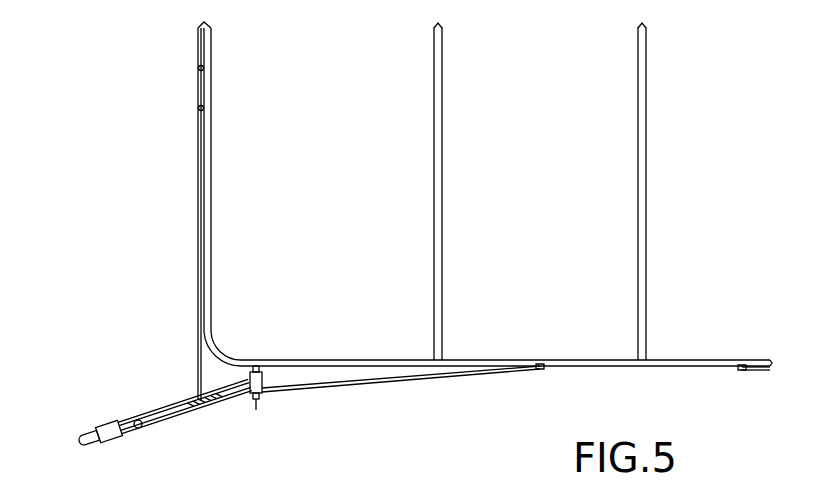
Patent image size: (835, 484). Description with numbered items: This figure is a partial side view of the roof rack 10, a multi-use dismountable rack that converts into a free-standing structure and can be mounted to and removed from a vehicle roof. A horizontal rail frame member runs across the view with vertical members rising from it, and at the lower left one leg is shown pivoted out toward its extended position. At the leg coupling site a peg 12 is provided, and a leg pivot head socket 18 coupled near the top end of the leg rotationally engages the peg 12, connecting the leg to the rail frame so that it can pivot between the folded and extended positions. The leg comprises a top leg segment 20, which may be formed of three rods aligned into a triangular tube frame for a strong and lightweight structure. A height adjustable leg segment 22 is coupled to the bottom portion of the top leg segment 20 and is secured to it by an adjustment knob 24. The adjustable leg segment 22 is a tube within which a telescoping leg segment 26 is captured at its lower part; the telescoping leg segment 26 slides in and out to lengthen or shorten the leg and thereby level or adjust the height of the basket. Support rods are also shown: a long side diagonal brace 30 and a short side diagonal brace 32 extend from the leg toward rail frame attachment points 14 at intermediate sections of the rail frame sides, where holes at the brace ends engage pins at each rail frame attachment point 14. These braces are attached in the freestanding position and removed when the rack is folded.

The roof rack 10 is at (662, 360).
The peg 12 is at (259, 400).
The rail frame attachment point 14 is at (203, 68).
The leg pivot head socket 18 is at (263, 382).
The top leg segment 20 is at (181, 398).
The height adjustable leg segment 22 is at (112, 428).
The adjustment knob 24 is at (141, 430).
The telescoping leg segment 26 is at (90, 436).
The long side diagonal brace 30 is at (366, 384).
The short side diagonal brace 32 is at (200, 30).